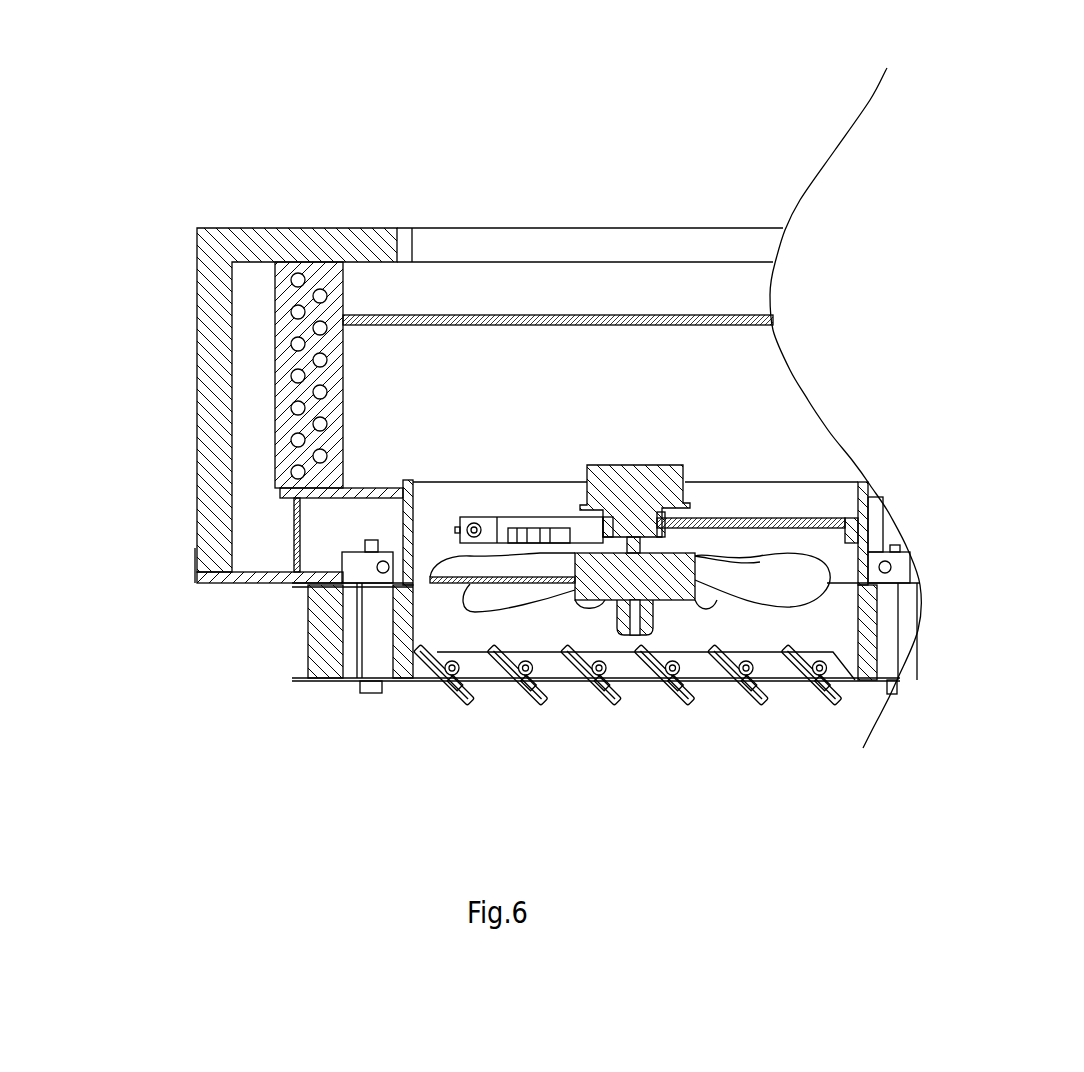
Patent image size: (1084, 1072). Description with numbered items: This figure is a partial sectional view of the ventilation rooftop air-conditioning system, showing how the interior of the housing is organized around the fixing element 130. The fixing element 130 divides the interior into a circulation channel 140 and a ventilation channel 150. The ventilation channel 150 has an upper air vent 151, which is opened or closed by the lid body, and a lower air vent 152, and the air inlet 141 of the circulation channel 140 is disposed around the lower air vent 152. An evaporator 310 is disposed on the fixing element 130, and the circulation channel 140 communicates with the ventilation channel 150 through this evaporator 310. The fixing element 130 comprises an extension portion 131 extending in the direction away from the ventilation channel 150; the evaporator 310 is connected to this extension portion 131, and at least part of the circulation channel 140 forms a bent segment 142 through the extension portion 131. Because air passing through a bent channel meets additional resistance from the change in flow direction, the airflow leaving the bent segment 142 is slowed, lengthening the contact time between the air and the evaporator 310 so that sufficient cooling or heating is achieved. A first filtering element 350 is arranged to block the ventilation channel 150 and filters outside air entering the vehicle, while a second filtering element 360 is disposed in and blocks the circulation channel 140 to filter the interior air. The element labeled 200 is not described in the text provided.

The circulation channel 140 is at (250, 314).
The upper air vent 151 is at (570, 248).
The evaporator 310 is at (300, 270).
The first filtering element 350 is at (709, 315).
The ventilation channel 150 is at (703, 411).
The second filtering element 360 is at (290, 511).
The bent segment 142 is at (285, 552).
The extension portion 131 is at (367, 490).
The fixing element 130 is at (398, 560).
The air inlet 141 is at (368, 675).
The fan assembly 200 is at (664, 598).
The lower air vent 152 is at (563, 683).